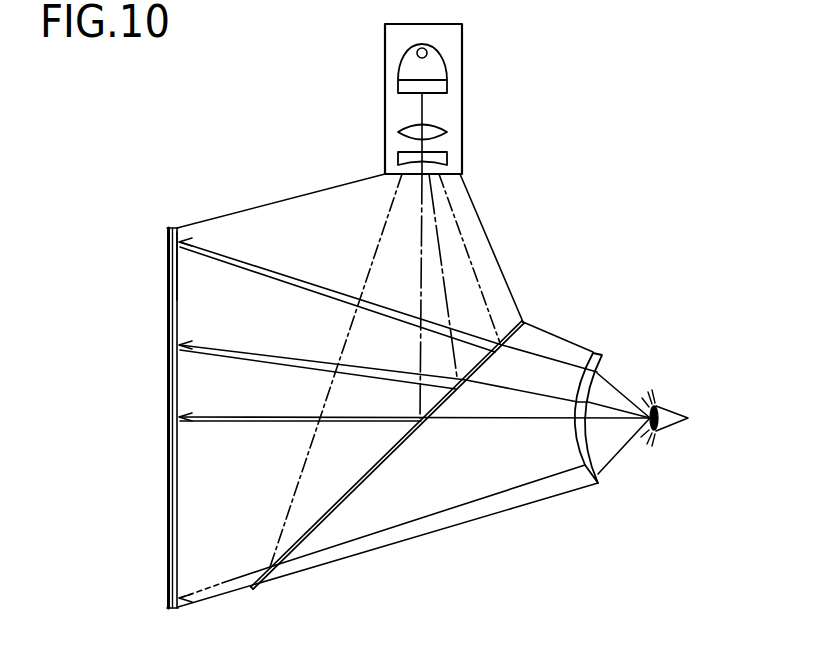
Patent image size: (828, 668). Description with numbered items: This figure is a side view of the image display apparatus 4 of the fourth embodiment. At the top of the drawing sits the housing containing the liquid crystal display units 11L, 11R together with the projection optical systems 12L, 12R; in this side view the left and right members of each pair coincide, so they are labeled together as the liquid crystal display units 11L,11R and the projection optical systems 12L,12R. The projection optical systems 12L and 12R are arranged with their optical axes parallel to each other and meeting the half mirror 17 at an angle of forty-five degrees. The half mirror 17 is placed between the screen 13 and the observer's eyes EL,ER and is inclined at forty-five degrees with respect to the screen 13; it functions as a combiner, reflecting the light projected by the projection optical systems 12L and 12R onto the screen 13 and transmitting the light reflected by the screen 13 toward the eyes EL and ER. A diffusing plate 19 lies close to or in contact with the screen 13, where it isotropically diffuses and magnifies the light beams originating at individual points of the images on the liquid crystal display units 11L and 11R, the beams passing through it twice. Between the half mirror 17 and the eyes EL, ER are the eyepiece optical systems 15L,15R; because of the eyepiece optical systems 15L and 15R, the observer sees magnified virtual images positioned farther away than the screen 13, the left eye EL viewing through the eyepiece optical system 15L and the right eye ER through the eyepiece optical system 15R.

The liquid crystal display units 11L,11R is at (496, 99).
The liquid crystal display unit 11L is at (496, 99).
The liquid crystal display unit 11R is at (447, 73).
The projection optical systems 12L,12R is at (511, 145).
The projection optical system 12L is at (511, 145).
The projection optical system 12R is at (448, 143).
The screen 13 is at (134, 418).
The diffusing plate 19 is at (178, 268).
The half mirror 17 is at (306, 540).
The eyepiece optical systems 15L,15R is at (641, 448).
The eyepiece optical system 15L is at (641, 448).
The eyepiece optical system 15R is at (603, 486).
The observer's eyes EL,ER is at (699, 439).
The observer's eye EL is at (699, 439).
The observer's eye ER is at (670, 428).
The image display apparatus 4 is at (434, 604).